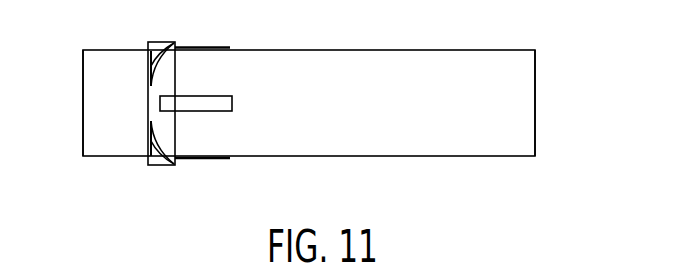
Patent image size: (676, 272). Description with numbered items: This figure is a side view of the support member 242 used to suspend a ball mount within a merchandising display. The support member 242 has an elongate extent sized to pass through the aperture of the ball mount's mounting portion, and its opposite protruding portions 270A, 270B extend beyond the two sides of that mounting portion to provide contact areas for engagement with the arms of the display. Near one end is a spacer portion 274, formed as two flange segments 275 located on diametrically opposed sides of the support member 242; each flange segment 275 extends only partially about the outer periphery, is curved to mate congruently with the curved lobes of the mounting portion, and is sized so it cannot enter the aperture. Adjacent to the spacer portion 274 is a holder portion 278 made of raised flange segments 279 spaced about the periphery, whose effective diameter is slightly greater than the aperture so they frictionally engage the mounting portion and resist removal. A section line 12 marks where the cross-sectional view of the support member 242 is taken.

The section line 12- 12 is at (567, 23).
The support member 242 is at (549, 122).
The protruding portion 270A is at (94, 146).
The protruding portion 270B is at (505, 145).
The spacer portion 274 is at (160, 181).
The flange segments 275 is at (149, 137).
The holder portion 278 is at (210, 181).
The flange segments 279 is at (223, 103).